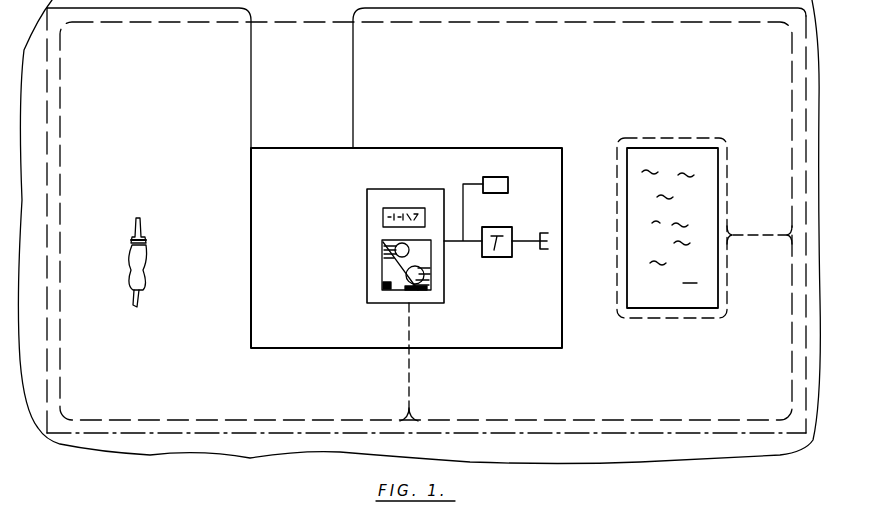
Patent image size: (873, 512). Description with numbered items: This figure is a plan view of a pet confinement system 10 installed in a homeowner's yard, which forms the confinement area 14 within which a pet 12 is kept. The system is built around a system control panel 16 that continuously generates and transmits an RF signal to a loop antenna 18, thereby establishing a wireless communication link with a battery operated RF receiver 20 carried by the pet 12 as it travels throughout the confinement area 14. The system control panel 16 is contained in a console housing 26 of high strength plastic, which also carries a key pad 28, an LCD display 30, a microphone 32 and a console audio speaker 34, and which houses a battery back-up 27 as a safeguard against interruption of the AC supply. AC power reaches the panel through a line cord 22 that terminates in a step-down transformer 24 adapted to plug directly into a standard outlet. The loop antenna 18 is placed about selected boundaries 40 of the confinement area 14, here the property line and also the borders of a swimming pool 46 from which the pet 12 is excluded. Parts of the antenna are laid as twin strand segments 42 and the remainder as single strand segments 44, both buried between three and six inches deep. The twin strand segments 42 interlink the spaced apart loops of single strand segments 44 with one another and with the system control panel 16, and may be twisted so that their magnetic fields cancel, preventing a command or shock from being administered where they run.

The pet confinement system 10 is at (298, 460).
The pet 12 is at (118, 288).
The confinement area 14 is at (142, 158).
The system control panel 16 is at (402, 190).
The loop antenna 18 is at (292, 23).
The RF receiver 20 is at (142, 247).
The line cord 22 is at (463, 247).
The step-down transformer 24 is at (504, 258).
The console housing 26 is at (441, 189).
The battery back-up 27 is at (500, 177).
The key pad 28 is at (382, 283).
The LCD display 30 is at (383, 216).
The microphone 32 is at (382, 262).
The console audio speaker 34 is at (421, 291).
The selected boundaries 40 is at (628, 283).
The twin strand segments 42 is at (753, 238).
The single strand segments 44 is at (722, 25).
The swimming pool 46 is at (648, 243).